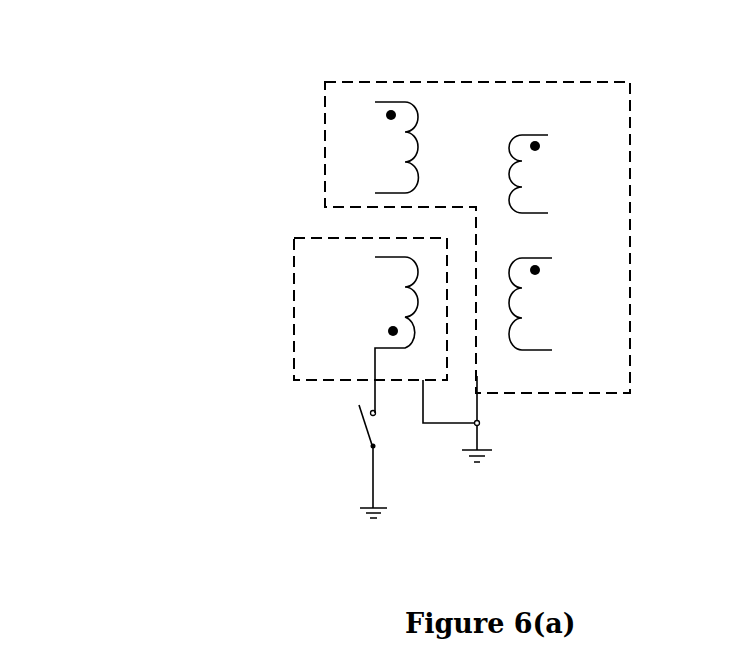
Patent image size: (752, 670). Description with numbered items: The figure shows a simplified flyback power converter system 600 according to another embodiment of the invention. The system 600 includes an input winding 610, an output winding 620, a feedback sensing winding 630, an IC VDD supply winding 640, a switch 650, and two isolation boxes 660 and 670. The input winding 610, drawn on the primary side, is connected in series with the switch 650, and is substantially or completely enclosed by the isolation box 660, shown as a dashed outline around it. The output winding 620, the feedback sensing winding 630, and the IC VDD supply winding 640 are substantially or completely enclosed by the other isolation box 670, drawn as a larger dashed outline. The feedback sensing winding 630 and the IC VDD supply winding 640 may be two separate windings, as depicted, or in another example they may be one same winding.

The flyback power converter system 600 is at (106, 58).
The input winding 610 is at (420, 268).
The output winding 620 is at (512, 135).
The feedback sensing winding 630 is at (512, 338).
The IC VDD supply winding 640 is at (410, 186).
The switch 650 is at (365, 440).
The isolation box 660 is at (294, 318).
The isolation box 670 is at (630, 305).